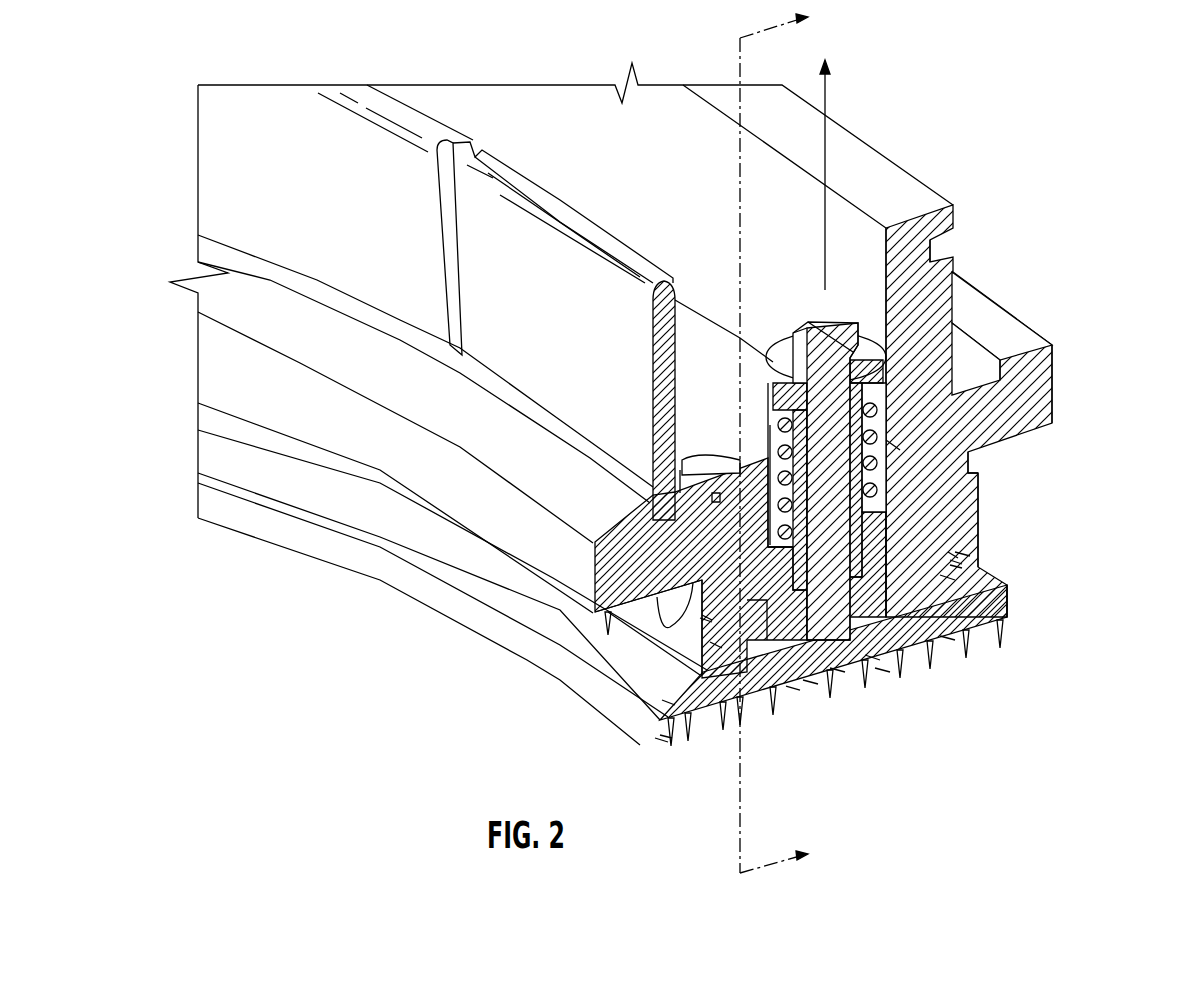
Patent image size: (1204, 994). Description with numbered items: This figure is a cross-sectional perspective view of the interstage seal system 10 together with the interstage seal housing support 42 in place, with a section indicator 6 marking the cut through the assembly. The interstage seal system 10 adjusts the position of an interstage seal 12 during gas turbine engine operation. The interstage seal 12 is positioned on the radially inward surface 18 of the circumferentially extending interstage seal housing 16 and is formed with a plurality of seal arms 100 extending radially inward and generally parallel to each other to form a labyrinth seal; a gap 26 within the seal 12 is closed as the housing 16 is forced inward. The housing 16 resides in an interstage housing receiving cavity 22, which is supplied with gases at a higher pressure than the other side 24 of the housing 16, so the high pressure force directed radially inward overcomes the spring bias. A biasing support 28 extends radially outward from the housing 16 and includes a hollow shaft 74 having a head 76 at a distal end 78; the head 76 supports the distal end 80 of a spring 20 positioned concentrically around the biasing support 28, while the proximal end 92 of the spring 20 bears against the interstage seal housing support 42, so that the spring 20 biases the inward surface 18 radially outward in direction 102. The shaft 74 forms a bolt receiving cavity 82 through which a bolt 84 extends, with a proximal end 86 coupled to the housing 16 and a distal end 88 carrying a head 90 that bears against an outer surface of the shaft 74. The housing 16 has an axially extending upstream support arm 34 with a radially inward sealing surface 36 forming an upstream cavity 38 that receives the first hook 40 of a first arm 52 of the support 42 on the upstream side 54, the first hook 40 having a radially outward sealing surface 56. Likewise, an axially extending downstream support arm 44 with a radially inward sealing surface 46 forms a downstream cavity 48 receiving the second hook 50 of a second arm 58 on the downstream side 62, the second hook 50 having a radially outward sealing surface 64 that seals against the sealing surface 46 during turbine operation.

The interstage seal system 10 is at (1040, 186).
The interstage seal 12 is at (1003, 650).
The interstage seal housing 16 is at (980, 547).
The radially inward surface 18 is at (793, 690).
The spring 20 is at (1020, 362).
The interstage housing receiving cavity 22 is at (978, 515).
The other side 24 is at (880, 673).
The gap 26 is at (757, 697).
The biasing support 28 is at (952, 330).
The axially extending upstream support arm 34 is at (708, 618).
The radially inward sealing surface 36 is at (715, 645).
The upstream cavity 38 is at (810, 683).
The first hook 40 is at (663, 737).
The interstage seal housing support 42 is at (990, 392).
The axially extending downstream support arm 44 is at (963, 557).
The radially inward sealing surface 46 is at (953, 555).
The downstream cavity 48 is at (1007, 613).
The second hook 50 is at (947, 578).
The first arm 52 is at (705, 620).
The upstream side 54 is at (667, 703).
The radially outward sealing surface 56 is at (837, 672).
The second arm 58 is at (957, 562).
The downstream side 62 is at (947, 640).
The radially outward sealing surface 64 is at (957, 565).
The shaft 74 is at (807, 455).
The head 76 is at (773, 398).
The distal end 78 is at (943, 292).
The distal end 80 is at (773, 425).
The bolt receiving cavity 82 is at (596, 552).
The bolt 84 is at (773, 497).
The proximal end 86 is at (872, 657).
The distal end 88 is at (818, 343).
The head 90 is at (945, 248).
The proximal end 92 is at (925, 455).
The seal arms 100 is at (687, 717).
The direction 102 is at (827, 130).
The section line 6 is at (783, 440).